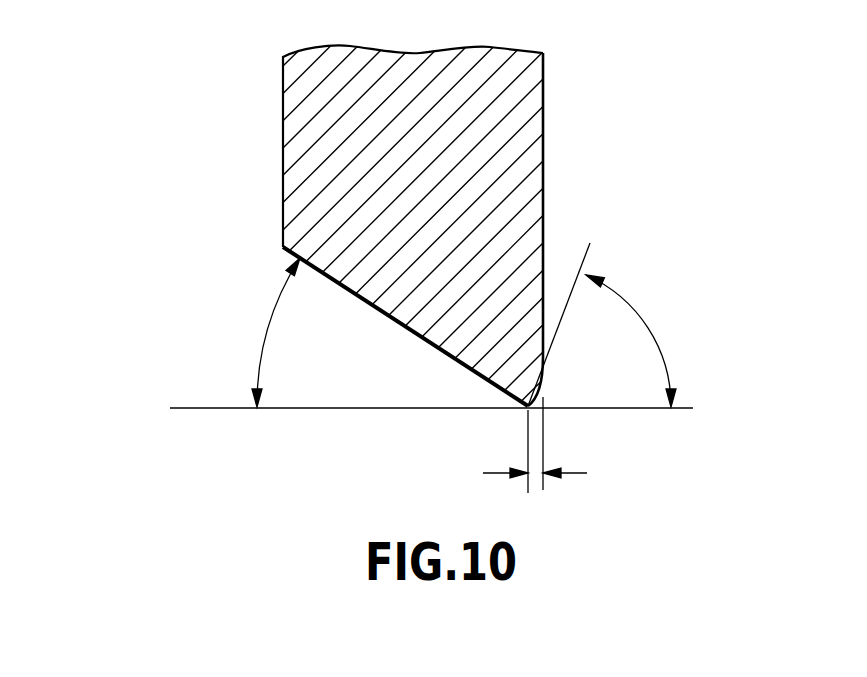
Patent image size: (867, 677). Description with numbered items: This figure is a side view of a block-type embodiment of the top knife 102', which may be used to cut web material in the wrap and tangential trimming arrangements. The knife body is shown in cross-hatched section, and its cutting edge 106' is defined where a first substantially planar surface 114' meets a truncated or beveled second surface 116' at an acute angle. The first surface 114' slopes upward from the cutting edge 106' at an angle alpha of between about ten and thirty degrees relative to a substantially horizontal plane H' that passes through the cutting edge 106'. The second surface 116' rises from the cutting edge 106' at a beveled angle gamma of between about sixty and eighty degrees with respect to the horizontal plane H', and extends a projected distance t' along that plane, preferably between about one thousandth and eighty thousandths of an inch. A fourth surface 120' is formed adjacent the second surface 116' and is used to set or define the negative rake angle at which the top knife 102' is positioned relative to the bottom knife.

The top knife 102' is at (306, 223).
The fourth surface 120' is at (583, 205).
The first surface 114' is at (405, 326).
The second surface 116' is at (579, 370).
The cutting edge 106' is at (501, 352).
The horizontal plane H' is at (415, 377).
The projected distance t' is at (535, 473).